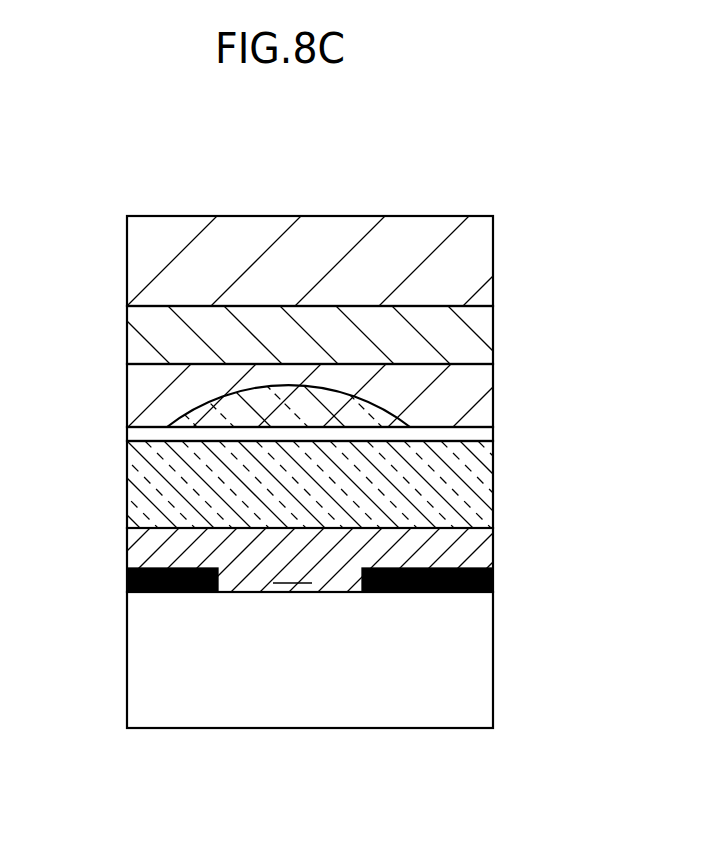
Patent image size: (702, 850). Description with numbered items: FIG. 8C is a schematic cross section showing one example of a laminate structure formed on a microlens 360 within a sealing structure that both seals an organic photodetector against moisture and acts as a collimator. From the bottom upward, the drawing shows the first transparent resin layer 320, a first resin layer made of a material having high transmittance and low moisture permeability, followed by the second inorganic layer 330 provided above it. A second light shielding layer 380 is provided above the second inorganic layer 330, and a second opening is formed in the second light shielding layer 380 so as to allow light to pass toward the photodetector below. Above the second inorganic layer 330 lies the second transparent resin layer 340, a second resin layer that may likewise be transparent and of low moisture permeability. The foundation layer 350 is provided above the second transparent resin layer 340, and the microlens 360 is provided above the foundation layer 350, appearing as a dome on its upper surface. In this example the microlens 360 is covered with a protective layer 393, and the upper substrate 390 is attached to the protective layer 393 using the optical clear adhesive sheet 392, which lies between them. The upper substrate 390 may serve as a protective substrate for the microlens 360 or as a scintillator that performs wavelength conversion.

The first transparent resin layer 320 is at (133, 678).
The second inorganic layer 330 is at (135, 547).
The second transparent resin layer 340 is at (135, 487).
The foundation layer 350 is at (135, 434).
The microlens 360 is at (214, 405).
The second light shielding layer 380 is at (478, 582).
The upper substrate 390 is at (135, 262).
The optical clear adhesive sheet 392 is at (134, 339).
The protective layer 393 is at (475, 405).